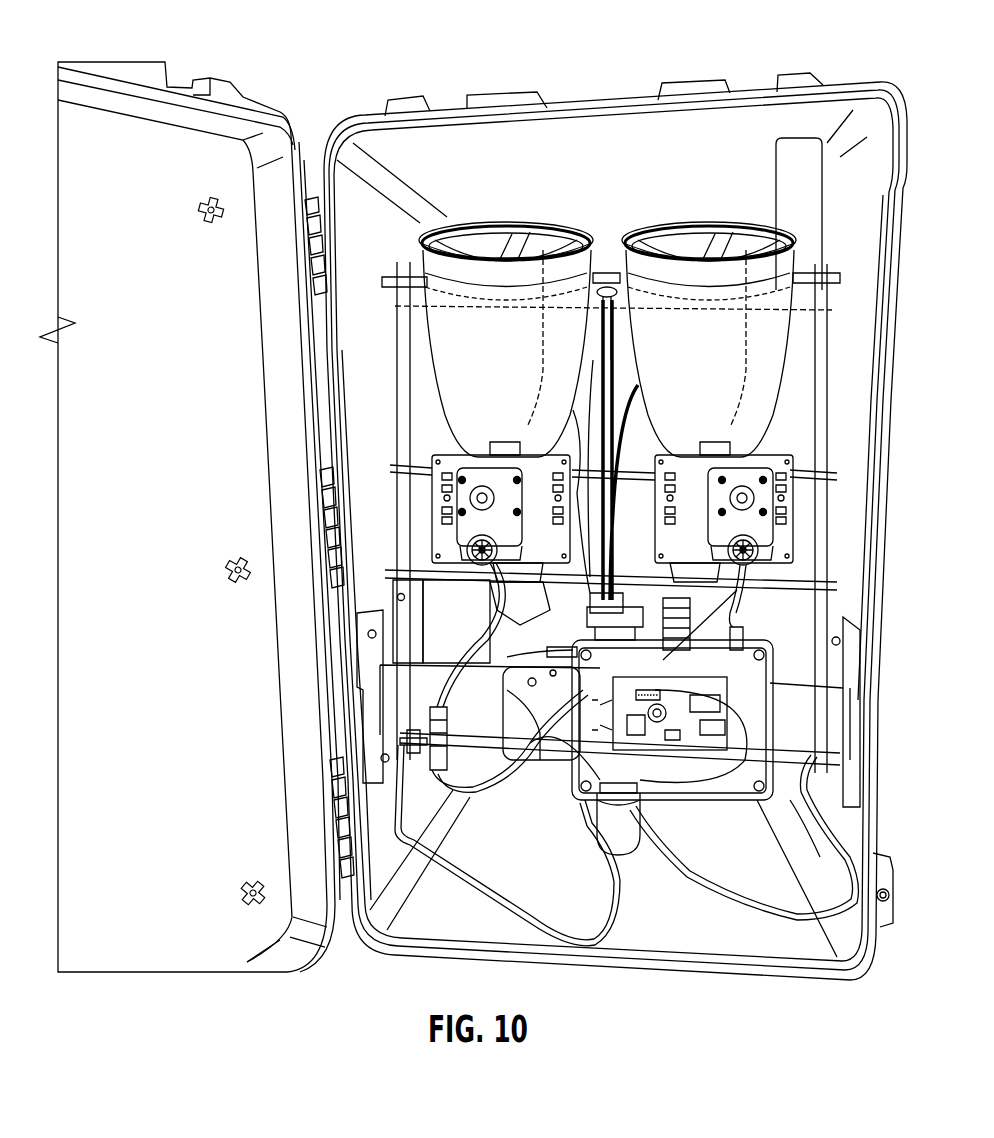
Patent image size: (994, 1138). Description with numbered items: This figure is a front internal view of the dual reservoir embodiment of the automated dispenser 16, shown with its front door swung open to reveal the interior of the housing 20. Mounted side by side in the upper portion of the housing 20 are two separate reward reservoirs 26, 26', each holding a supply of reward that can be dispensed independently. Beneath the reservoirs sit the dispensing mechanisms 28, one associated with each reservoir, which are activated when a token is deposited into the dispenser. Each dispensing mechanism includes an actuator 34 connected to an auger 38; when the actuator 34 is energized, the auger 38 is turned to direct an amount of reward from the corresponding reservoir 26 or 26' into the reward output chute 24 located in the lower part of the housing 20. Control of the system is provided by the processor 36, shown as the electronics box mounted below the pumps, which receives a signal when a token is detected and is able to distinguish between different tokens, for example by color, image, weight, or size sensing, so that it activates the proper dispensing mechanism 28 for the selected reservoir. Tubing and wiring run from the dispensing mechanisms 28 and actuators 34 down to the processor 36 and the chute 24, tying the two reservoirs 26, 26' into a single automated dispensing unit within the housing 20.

The dual reservoir dispenser 16 is at (283, 117).
The housing 20 is at (606, 116).
The reward output/chute 24 is at (605, 830).
The reward reservoir 26 is at (470, 339).
The second reward reservoir 26' is at (745, 339).
The dispensing mechanism 28 is at (424, 504).
The actuator 34 is at (770, 558).
The processor 36 is at (750, 698).
The auger 38 is at (817, 175).